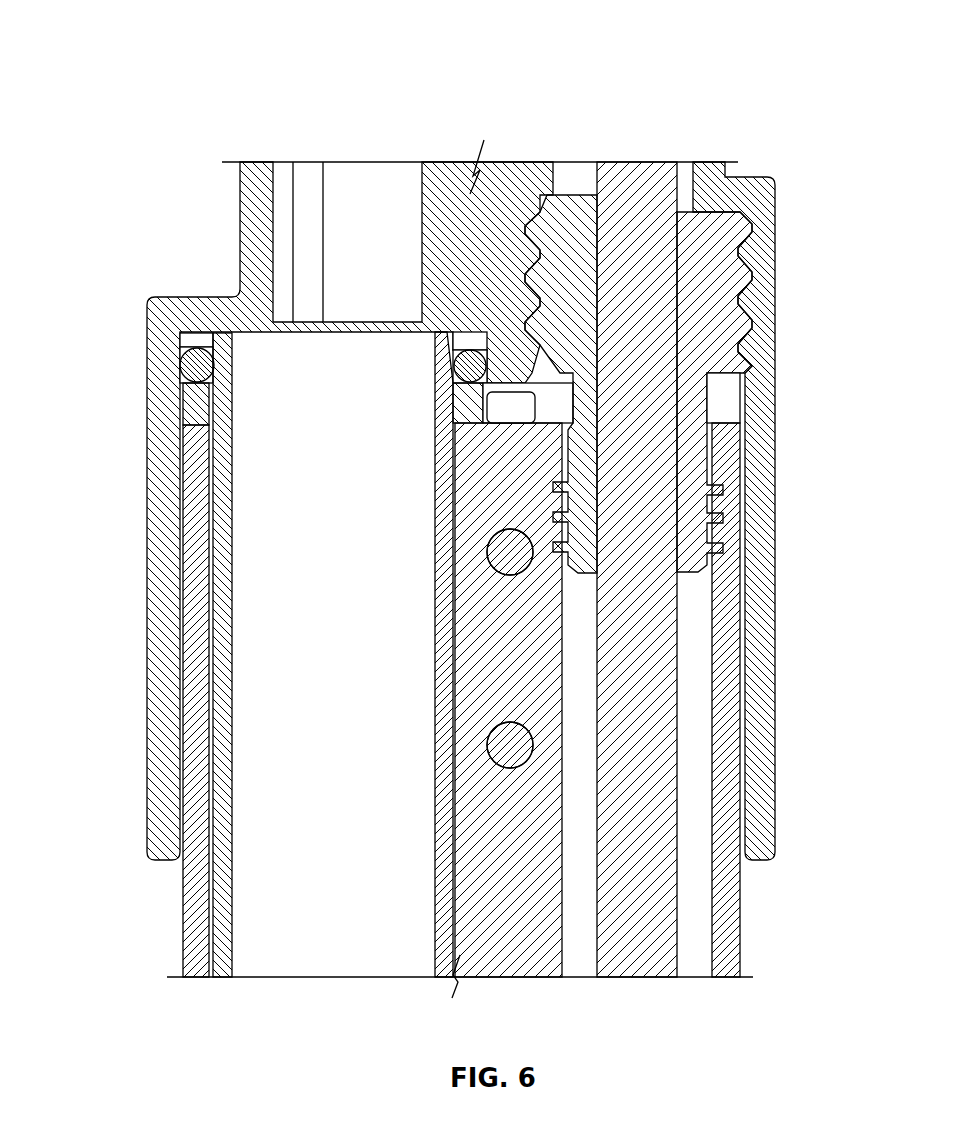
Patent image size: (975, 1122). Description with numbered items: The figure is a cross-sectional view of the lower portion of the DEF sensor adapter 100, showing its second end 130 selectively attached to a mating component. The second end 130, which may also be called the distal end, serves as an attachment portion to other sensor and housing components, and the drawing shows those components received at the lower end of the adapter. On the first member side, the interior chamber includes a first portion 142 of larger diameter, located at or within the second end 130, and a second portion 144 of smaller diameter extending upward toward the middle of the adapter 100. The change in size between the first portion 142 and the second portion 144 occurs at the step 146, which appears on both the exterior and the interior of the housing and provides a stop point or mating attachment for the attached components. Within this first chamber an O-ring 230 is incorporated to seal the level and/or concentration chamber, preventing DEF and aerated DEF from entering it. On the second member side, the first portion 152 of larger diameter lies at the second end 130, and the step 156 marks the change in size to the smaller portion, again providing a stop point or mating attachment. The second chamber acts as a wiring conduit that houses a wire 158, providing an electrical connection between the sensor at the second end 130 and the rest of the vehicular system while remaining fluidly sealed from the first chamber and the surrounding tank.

The sensor adapter 100 is at (134, 58).
The second end 130 is at (764, 840).
The first portion 142 is at (197, 334).
The second portion 144 is at (338, 188).
The step 146 is at (186, 302).
The first portion 152 is at (736, 412).
The step 156 is at (759, 184).
The wire 158 is at (624, 184).
The O-ring 230 is at (191, 368).